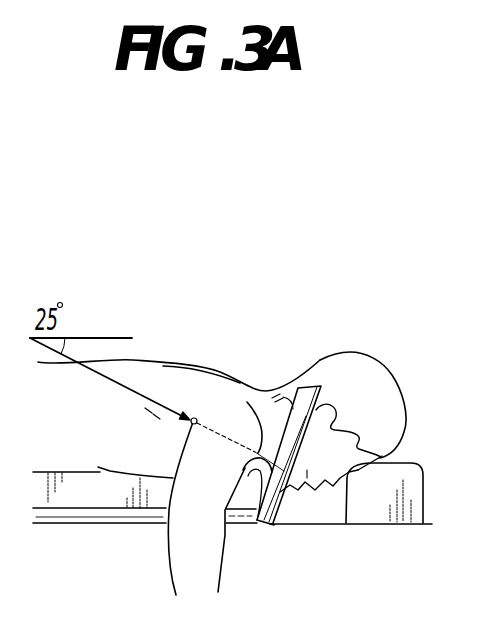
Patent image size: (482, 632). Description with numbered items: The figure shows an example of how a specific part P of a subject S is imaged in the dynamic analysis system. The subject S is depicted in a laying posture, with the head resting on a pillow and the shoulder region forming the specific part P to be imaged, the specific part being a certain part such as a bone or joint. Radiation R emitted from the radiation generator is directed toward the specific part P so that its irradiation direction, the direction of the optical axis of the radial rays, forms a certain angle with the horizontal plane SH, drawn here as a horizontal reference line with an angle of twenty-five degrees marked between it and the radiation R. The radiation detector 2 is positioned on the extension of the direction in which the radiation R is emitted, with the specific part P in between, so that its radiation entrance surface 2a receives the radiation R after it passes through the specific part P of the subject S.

The radiation detector 2 is at (303, 380).
The radiation entrance surface 2a is at (272, 487).
The specific part P is at (205, 393).
The subject S is at (352, 362).
The radiation R is at (104, 377).
The horizontal plane SH is at (112, 337).